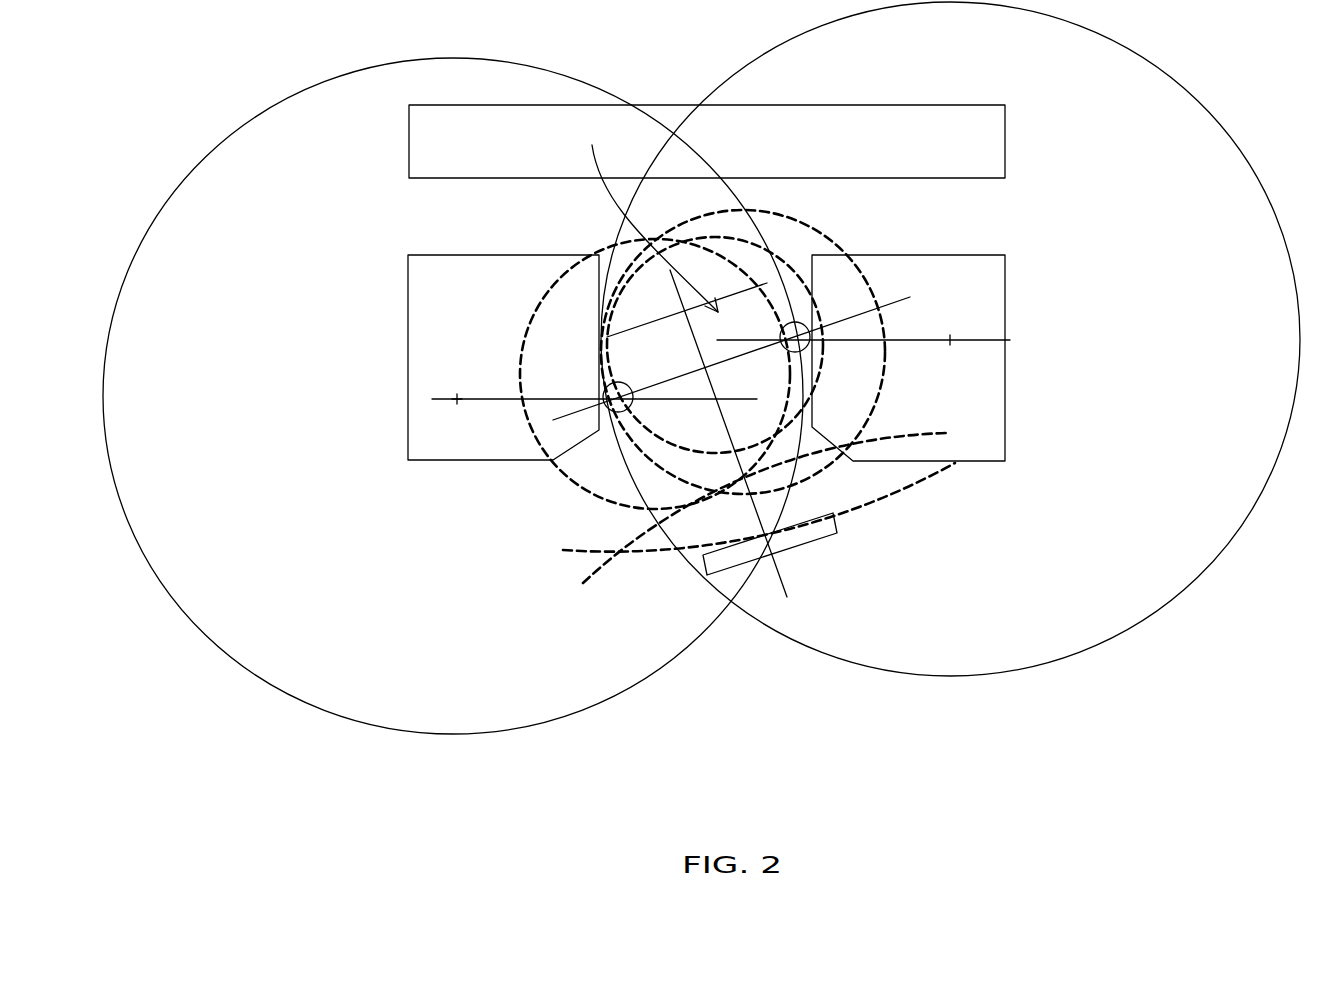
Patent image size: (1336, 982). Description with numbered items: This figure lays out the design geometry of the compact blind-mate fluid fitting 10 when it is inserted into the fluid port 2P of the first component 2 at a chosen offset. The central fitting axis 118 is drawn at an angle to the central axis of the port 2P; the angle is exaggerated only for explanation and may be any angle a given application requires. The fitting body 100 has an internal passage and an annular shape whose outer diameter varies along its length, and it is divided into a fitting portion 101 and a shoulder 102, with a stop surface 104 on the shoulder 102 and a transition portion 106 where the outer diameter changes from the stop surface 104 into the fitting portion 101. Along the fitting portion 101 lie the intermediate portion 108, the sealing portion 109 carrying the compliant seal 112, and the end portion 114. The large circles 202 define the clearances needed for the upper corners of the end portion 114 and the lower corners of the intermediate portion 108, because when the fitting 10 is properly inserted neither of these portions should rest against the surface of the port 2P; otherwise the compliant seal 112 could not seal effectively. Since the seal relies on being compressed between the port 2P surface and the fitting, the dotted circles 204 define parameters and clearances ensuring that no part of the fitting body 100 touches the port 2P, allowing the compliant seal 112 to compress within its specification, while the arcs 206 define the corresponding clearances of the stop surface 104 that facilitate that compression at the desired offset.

The first component 2 is at (432, 340).
The fluid port 2P is at (812, 290).
The fitting 10 is at (647, 216).
The fluid fitting body 100 is at (660, 500).
The fitting portion 101 is at (815, 367).
The shoulder 102 is at (827, 497).
The stop surface 104 is at (648, 548).
The transition portion 106 is at (815, 447).
The intermediate portion 108 is at (650, 442).
The sealing portion 109 is at (840, 333).
The compliant seal 112 is at (808, 322).
The end portion 114 is at (600, 368).
The central fitting axis 118 is at (790, 583).
The circles 202 is at (1135, 622).
The dotted circles 204 is at (576, 290).
The arcs 206 is at (583, 582).